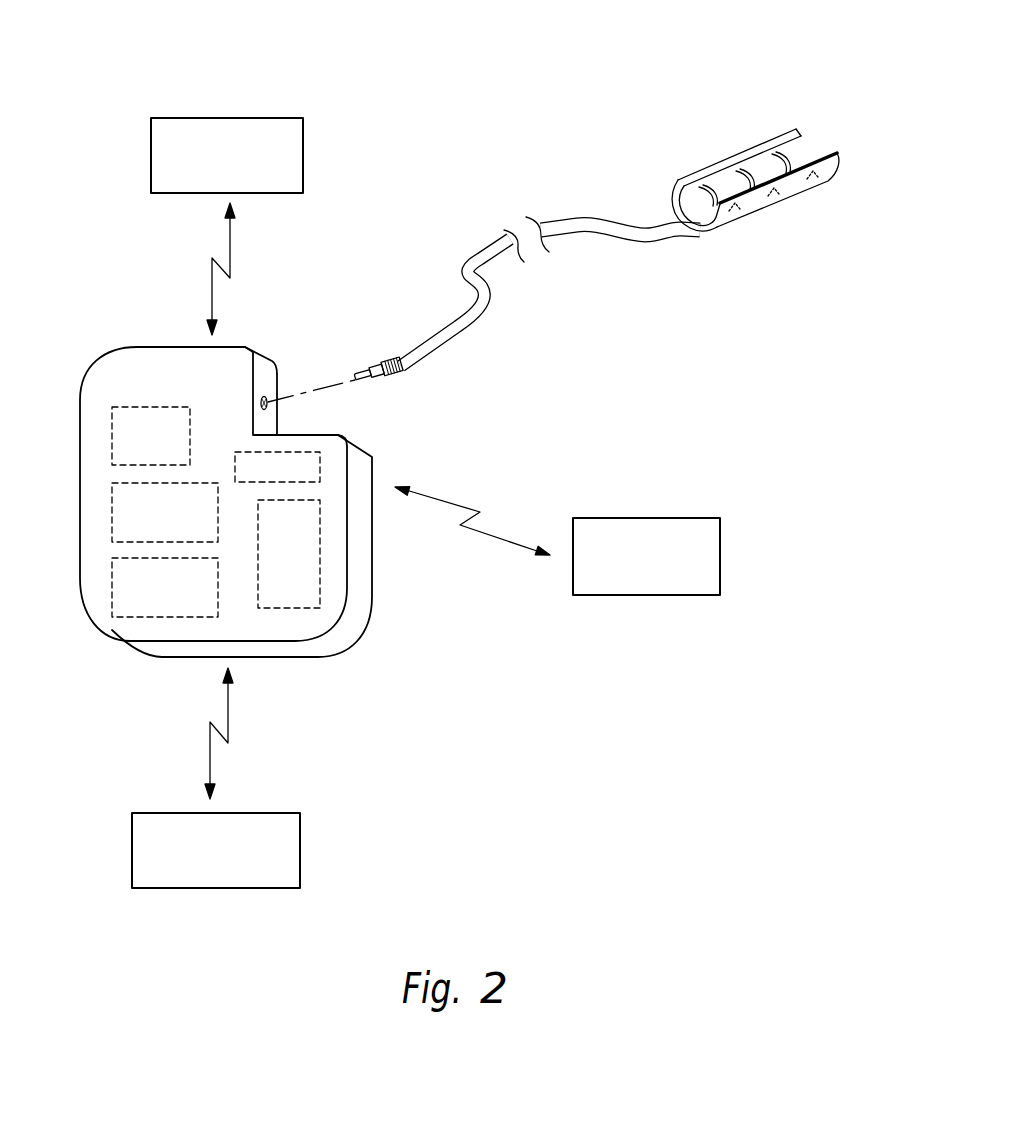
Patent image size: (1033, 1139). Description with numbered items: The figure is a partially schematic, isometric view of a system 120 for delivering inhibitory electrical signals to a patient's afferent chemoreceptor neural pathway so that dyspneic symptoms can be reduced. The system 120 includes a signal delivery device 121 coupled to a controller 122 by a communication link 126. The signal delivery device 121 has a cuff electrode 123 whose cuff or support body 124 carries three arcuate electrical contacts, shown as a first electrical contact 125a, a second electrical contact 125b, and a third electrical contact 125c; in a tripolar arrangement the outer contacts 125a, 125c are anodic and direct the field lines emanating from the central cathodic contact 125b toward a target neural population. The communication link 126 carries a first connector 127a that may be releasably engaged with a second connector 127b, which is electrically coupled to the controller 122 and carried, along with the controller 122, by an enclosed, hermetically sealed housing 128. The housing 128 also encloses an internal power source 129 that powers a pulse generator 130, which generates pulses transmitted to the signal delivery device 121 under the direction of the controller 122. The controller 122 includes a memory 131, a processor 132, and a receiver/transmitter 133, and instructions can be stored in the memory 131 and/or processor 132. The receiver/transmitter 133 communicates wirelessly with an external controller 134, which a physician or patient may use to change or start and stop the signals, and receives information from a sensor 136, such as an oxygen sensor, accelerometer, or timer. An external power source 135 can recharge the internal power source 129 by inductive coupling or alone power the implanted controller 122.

The system 120 is at (443, 124).
The signal delivery device 121 is at (716, 192).
The controller 122 is at (330, 497).
The cuff electrode 123 is at (742, 152).
The support body 124 is at (838, 161).
The first electrical contact 125a is at (737, 209).
The second electrical contact 125b is at (775, 194).
The third electrical contact 125c is at (816, 177).
The communication link 126 is at (461, 341).
The first connector 127a is at (372, 345).
The second connector 127b is at (272, 401).
The housing 128 is at (332, 644).
The internal power source 129 is at (162, 606).
The pulse generator 130 is at (315, 578).
The memory 131 is at (112, 528).
The processor 132 is at (127, 407).
The receiver/transmitter 133 is at (304, 451).
The external controller 134 is at (678, 518).
The external power source 135 is at (272, 813).
The sensor 136 is at (183, 117).